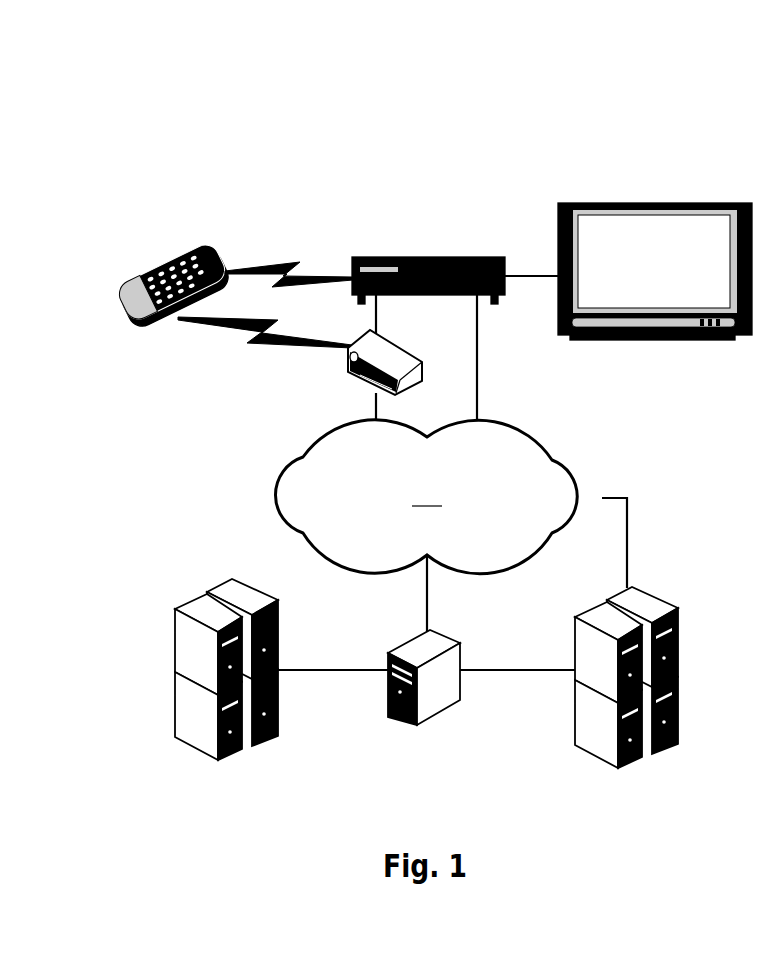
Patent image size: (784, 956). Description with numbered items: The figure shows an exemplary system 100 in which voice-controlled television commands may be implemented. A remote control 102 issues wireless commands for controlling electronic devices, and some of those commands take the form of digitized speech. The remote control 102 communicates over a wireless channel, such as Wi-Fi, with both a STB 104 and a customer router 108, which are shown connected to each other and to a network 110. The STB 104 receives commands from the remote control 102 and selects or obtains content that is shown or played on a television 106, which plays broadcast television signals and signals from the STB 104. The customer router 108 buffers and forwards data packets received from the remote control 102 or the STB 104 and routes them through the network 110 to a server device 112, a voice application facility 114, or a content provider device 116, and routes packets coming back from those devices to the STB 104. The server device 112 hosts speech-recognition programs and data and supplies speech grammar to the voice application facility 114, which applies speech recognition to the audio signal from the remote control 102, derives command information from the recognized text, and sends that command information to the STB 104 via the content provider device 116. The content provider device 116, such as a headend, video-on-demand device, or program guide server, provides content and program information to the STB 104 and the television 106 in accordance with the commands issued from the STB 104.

The system 100 is at (440, 86).
The remote control 102 is at (171, 256).
The STB 104 is at (428, 257).
The television 106 is at (653, 203).
The customer router 108 is at (347, 367).
The network 110 is at (272, 462).
The server device 112 is at (200, 713).
The voice application facility 114 is at (427, 725).
The content provider device 116 is at (655, 755).